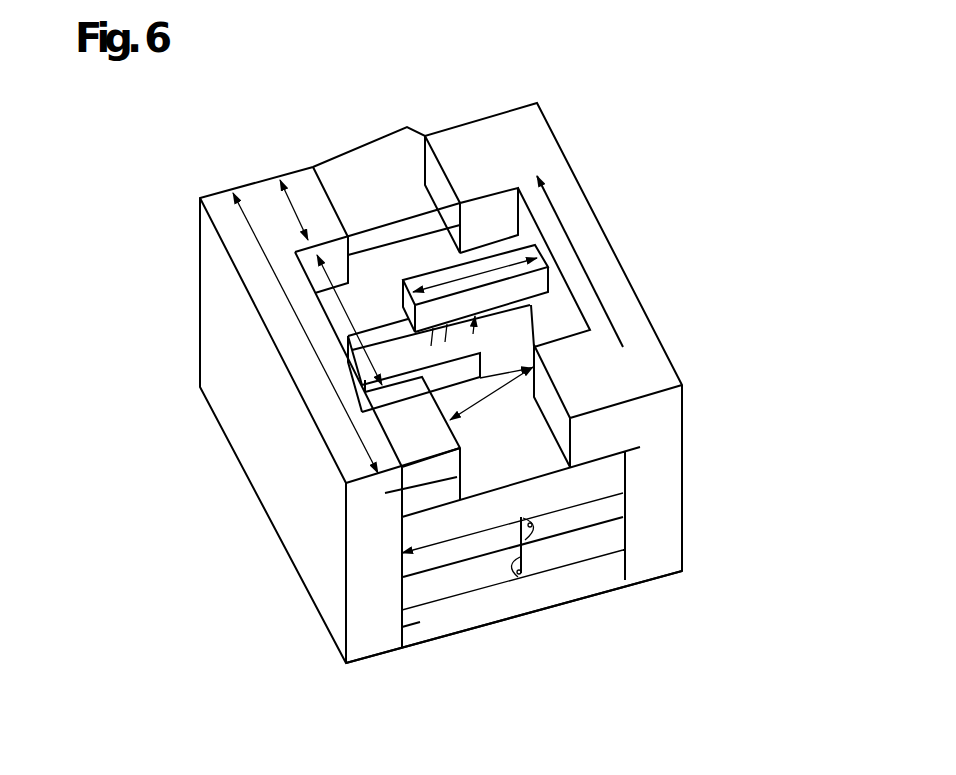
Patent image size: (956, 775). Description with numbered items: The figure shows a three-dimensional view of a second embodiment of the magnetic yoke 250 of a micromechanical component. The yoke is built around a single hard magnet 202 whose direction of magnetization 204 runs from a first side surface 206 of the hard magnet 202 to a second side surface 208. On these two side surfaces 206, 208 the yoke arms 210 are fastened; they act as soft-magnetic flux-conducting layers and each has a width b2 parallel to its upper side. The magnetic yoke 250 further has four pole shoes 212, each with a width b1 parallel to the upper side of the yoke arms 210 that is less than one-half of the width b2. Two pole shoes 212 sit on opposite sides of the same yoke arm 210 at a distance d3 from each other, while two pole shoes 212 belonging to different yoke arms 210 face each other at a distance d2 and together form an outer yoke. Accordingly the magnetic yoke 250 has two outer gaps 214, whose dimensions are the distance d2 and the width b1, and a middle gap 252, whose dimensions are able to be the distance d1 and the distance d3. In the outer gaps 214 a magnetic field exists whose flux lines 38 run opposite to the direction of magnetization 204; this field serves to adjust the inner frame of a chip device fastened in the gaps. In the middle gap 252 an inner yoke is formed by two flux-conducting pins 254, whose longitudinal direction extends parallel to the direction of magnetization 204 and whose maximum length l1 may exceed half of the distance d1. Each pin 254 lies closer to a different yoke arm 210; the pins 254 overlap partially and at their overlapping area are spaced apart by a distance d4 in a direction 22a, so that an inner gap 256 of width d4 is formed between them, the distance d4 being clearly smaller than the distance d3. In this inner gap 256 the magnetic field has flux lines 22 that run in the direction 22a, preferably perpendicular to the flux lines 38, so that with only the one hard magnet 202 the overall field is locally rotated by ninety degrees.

The magnetic yoke 250 is at (651, 78).
The yoke arm 210 is at (660, 507).
The pole shoe 212 is at (292, 178).
The outer gap 214 is at (369, 131).
The middle gap 252 is at (416, 233).
The pin 254 is at (520, 240).
The inner gap 256 is at (393, 360).
The flux lines 22 is at (461, 322).
The direction 22a is at (553, 213).
The flux lines 38 is at (447, 482).
The hard magnet 202 is at (532, 511).
The direction of magnetization 204 is at (485, 590).
The first side surface 206 is at (626, 553).
The second side surface 208 is at (407, 622).
The width of pole shoe b1 is at (300, 207).
The width of flux-conducting layer b2 is at (263, 262).
The distance d1 is at (562, 513).
The distance d2 is at (547, 387).
The distance d3 is at (405, 327).
The distance d4 is at (473, 298).
The maximum length of pin l1 is at (520, 278).